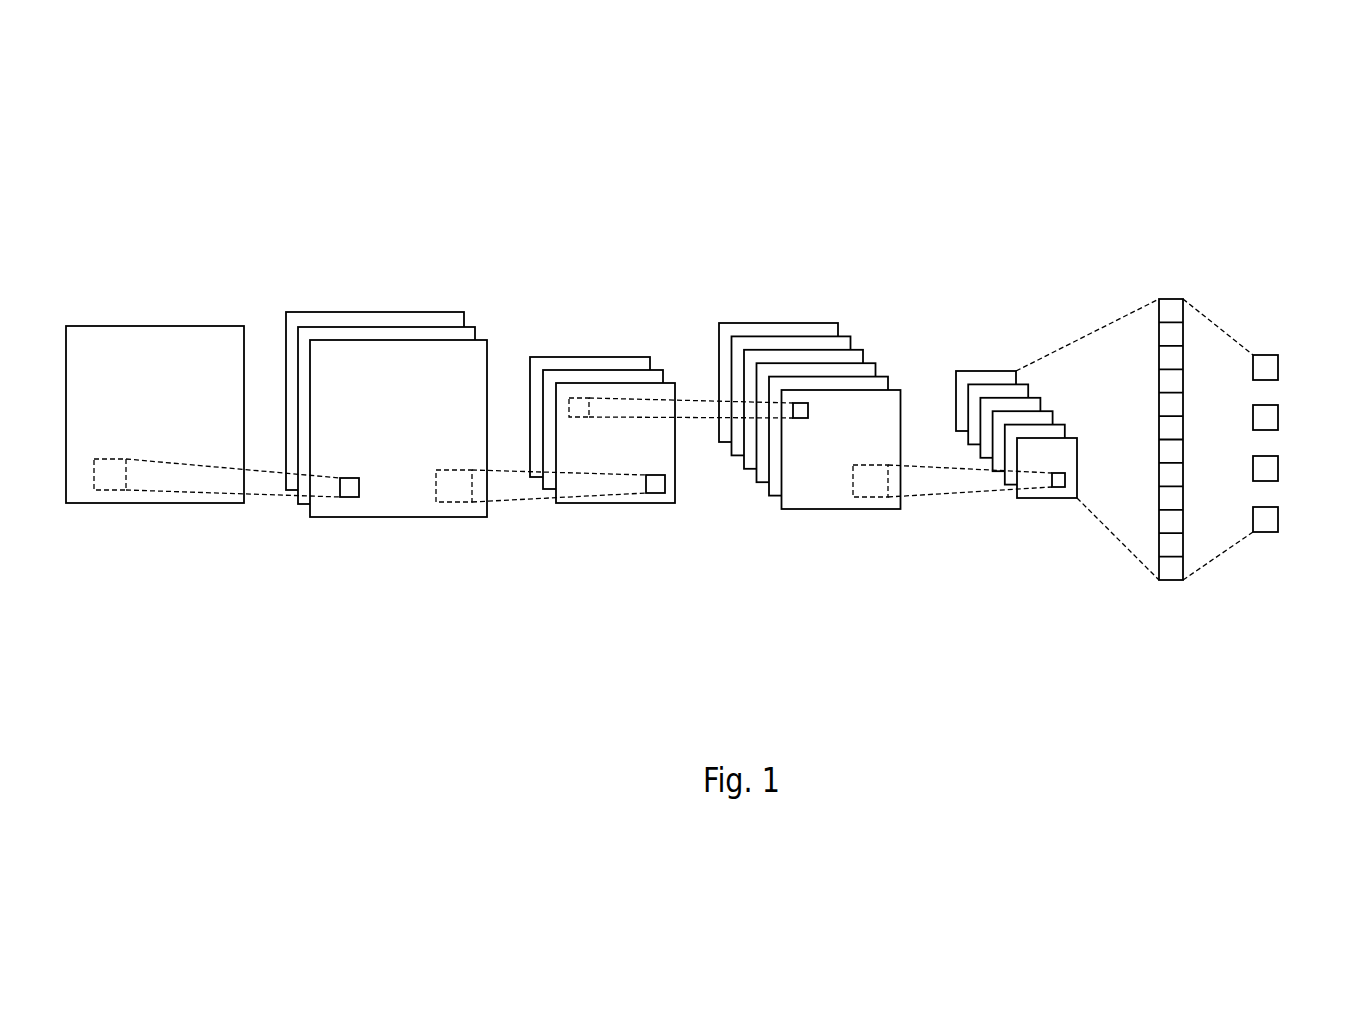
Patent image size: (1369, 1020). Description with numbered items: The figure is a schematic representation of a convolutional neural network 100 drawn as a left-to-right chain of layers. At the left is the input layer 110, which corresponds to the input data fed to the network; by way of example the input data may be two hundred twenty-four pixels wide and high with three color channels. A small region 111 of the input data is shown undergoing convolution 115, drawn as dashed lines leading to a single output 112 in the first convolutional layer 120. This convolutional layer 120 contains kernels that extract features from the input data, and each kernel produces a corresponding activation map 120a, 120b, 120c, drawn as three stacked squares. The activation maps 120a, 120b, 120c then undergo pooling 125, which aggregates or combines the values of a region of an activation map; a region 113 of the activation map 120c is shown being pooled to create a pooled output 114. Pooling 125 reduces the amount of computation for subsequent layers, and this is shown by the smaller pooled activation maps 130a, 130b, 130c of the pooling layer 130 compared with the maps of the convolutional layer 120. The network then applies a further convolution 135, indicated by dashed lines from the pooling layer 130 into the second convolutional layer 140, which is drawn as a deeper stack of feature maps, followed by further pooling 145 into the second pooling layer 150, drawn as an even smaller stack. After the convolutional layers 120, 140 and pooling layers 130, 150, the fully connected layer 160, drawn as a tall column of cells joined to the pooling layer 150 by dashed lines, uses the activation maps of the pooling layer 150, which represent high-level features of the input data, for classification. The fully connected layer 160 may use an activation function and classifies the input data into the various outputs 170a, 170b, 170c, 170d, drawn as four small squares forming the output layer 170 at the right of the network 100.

The convolutional neural network 100 is at (113, 132).
The input layer 110 is at (218, 325).
The region of the input data 111 is at (117, 492).
The output 112 is at (350, 497).
The region of the activation map 113 is at (448, 502).
The pooled output 114 is at (653, 493).
The convolution 115 is at (270, 495).
The convolutional layer 120 is at (386, 448).
The activation map 120a is at (289, 310).
The activation map 120b is at (323, 327).
The activation map 120c is at (363, 340).
The pooling 125 is at (522, 503).
The pooling layer 130 is at (602, 468).
The pooled activation map 130a is at (533, 357).
The pooled activation map 130b is at (553, 370).
The pooled activation map 130c is at (593, 383).
The further convolution 135 is at (683, 418).
The second convolutional layer 140 is at (900, 599).
The further pooling 145 is at (923, 498).
The second pooling layer 150 is at (1077, 599).
The fully connected layer 160 is at (1183, 601).
The output layer 170 is at (1305, 483).
The output 170a is at (1270, 355).
The output 170b is at (1270, 405).
The output 170c is at (1270, 456).
The output 170d is at (1270, 507).